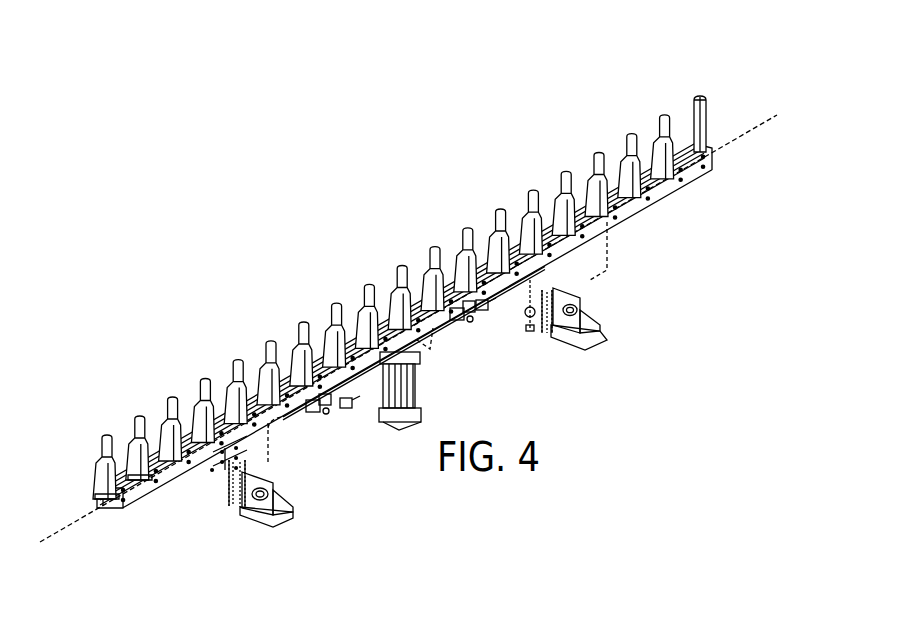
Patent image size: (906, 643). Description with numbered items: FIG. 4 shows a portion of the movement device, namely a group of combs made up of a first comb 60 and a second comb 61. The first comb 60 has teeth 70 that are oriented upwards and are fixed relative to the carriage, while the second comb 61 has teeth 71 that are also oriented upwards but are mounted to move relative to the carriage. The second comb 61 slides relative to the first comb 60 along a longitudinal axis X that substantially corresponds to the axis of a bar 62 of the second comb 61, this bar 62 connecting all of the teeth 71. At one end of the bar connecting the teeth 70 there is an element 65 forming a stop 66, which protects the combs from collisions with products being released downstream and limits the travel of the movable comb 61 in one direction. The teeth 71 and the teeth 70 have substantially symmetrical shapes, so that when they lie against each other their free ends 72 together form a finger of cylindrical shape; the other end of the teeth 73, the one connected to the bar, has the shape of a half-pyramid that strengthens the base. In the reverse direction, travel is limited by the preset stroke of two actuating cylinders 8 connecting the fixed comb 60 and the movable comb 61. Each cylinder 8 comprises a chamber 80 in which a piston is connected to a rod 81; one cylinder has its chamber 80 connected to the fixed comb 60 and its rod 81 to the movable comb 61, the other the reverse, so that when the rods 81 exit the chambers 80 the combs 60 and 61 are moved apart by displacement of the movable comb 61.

The first comb 60 is at (143, 492).
The second comb 61 is at (292, 370).
The bar 62 is at (614, 193).
The element 65 is at (692, 113).
The stop 66 is at (704, 88).
The teeth 70 is at (118, 457).
The teeth 71 is at (137, 450).
The free ends 72 is at (430, 245).
The other end of the teeth 73 is at (550, 244).
The actuating cylinder 8 is at (477, 322).
The chamber 80 is at (484, 307).
The rod 81 is at (347, 404).
The axis X is at (752, 122).